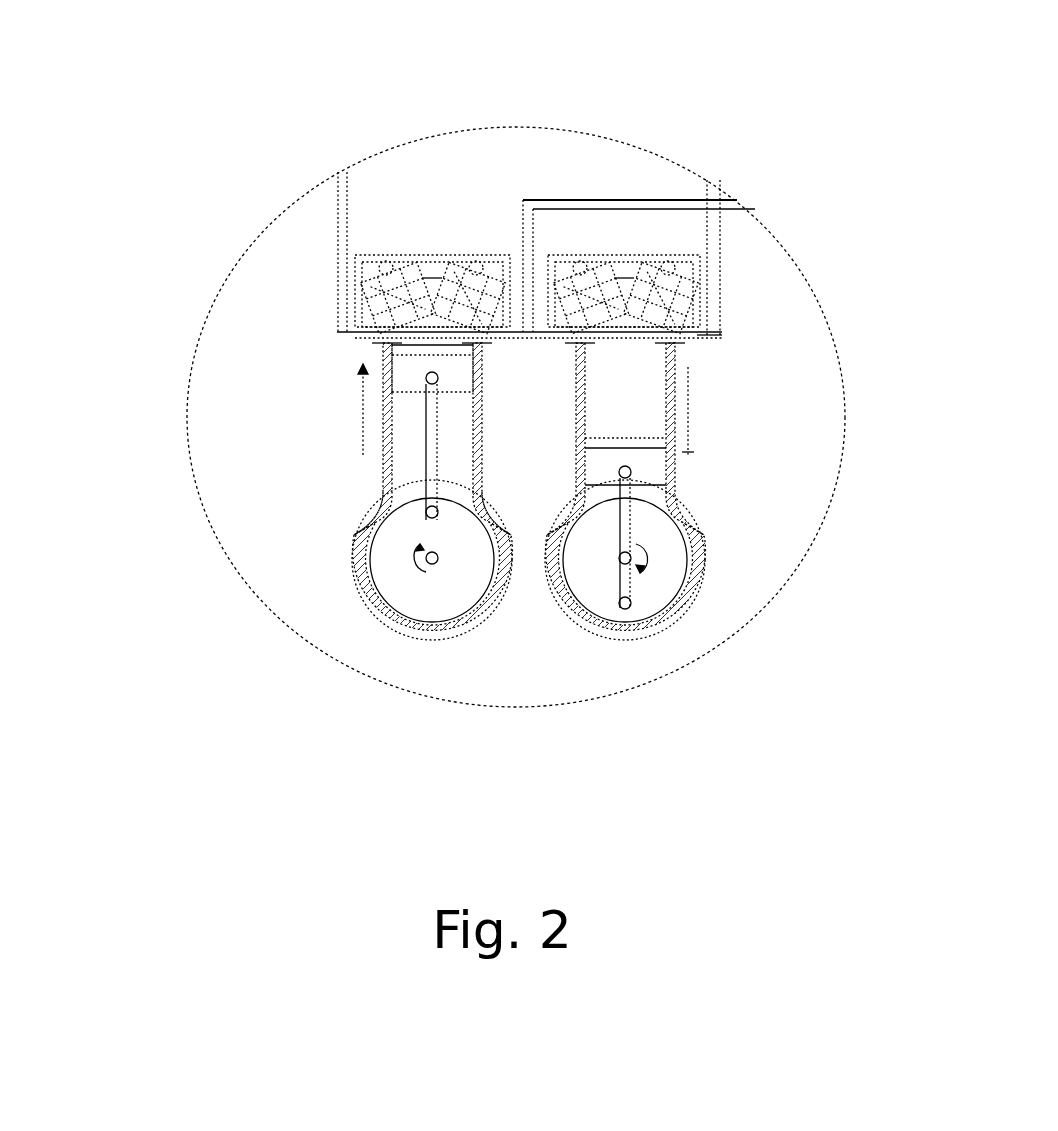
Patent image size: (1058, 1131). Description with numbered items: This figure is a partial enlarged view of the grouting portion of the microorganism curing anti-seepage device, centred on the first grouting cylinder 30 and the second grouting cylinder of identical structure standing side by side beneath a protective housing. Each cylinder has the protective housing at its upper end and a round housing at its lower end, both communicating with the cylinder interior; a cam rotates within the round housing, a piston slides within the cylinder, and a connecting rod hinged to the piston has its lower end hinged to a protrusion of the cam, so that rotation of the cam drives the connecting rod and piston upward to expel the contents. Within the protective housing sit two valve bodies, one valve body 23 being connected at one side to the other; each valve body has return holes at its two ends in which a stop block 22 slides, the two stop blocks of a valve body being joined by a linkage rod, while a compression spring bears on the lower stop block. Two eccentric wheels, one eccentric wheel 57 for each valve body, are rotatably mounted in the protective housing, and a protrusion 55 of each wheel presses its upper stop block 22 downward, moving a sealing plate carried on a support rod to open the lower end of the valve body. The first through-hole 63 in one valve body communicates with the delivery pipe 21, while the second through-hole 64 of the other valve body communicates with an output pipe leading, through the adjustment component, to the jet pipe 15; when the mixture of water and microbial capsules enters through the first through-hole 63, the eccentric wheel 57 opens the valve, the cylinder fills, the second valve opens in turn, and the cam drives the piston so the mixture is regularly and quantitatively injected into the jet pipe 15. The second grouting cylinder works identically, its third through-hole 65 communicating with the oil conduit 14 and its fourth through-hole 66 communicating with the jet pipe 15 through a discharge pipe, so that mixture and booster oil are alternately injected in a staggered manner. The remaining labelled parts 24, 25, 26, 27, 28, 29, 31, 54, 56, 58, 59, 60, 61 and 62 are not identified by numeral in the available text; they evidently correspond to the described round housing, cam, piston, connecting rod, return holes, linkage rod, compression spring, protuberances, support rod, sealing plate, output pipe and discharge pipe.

The oil conduit 14 is at (700, 325).
The jet pipe 15 is at (527, 255).
The delivery pipe 21 is at (348, 202).
The stop block 22 is at (405, 265).
The valve body 23 is at (445, 252).
The pivot shaft 24 is at (400, 302).
The inner housing 25 is at (425, 283).
The motion indicator 26 is at (372, 392).
The third pressing block 27 is at (697, 282).
The piston pin 28 is at (455, 382).
The connecting rod 29 is at (437, 433).
The first grouting cylinder 30 is at (497, 482).
The crankcase 31 is at (500, 545).
The crankshaft 54 is at (495, 598).
The protrusion 55 is at (425, 360).
The base plate 56 is at (383, 337).
The eccentric wheel 57 is at (697, 255).
The second crankcase 58 is at (613, 593).
The first housing 59 is at (355, 272).
The piston ring 60 is at (378, 415).
The piston 61 is at (375, 372).
The cylinder flange 62 is at (380, 440).
The first through-hole 63 is at (375, 352).
The second through-hole 64 is at (382, 465).
The third through-hole 65 is at (707, 333).
The fourth through-hole 66 is at (690, 365).